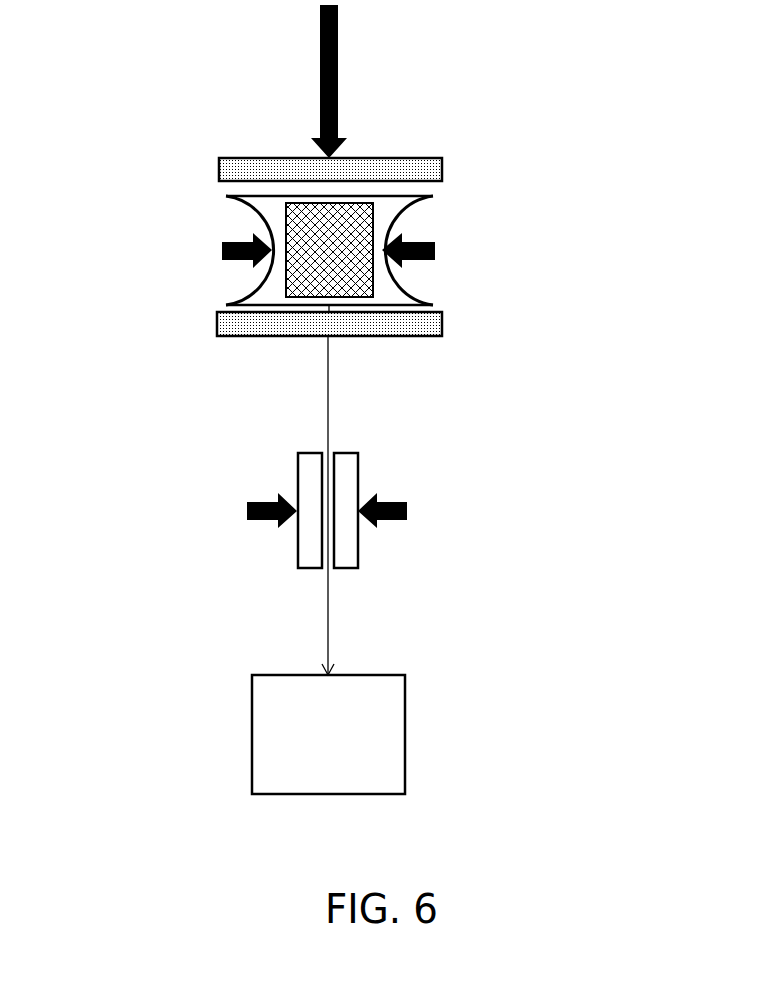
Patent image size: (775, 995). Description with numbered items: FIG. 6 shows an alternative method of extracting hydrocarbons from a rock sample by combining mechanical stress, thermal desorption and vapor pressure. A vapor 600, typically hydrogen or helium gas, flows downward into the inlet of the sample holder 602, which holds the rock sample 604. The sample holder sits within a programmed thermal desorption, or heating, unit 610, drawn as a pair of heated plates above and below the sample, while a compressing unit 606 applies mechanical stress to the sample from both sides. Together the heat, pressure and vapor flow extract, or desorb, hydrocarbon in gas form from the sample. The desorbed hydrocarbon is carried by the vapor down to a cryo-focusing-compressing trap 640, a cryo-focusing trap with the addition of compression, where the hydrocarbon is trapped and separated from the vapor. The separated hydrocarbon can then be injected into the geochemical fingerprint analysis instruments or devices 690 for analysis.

The vapor 600 is at (414, 81).
The sample holder 602 is at (280, 193).
The rock sample 604 is at (285, 232).
The compressing unit 606 is at (435, 248).
The programmed thermal desorption unit 610 is at (422, 170).
The cryo-focusing-compressing trap 640 is at (492, 510).
The geochemical fingerprint analysis instruments 690 is at (465, 729).